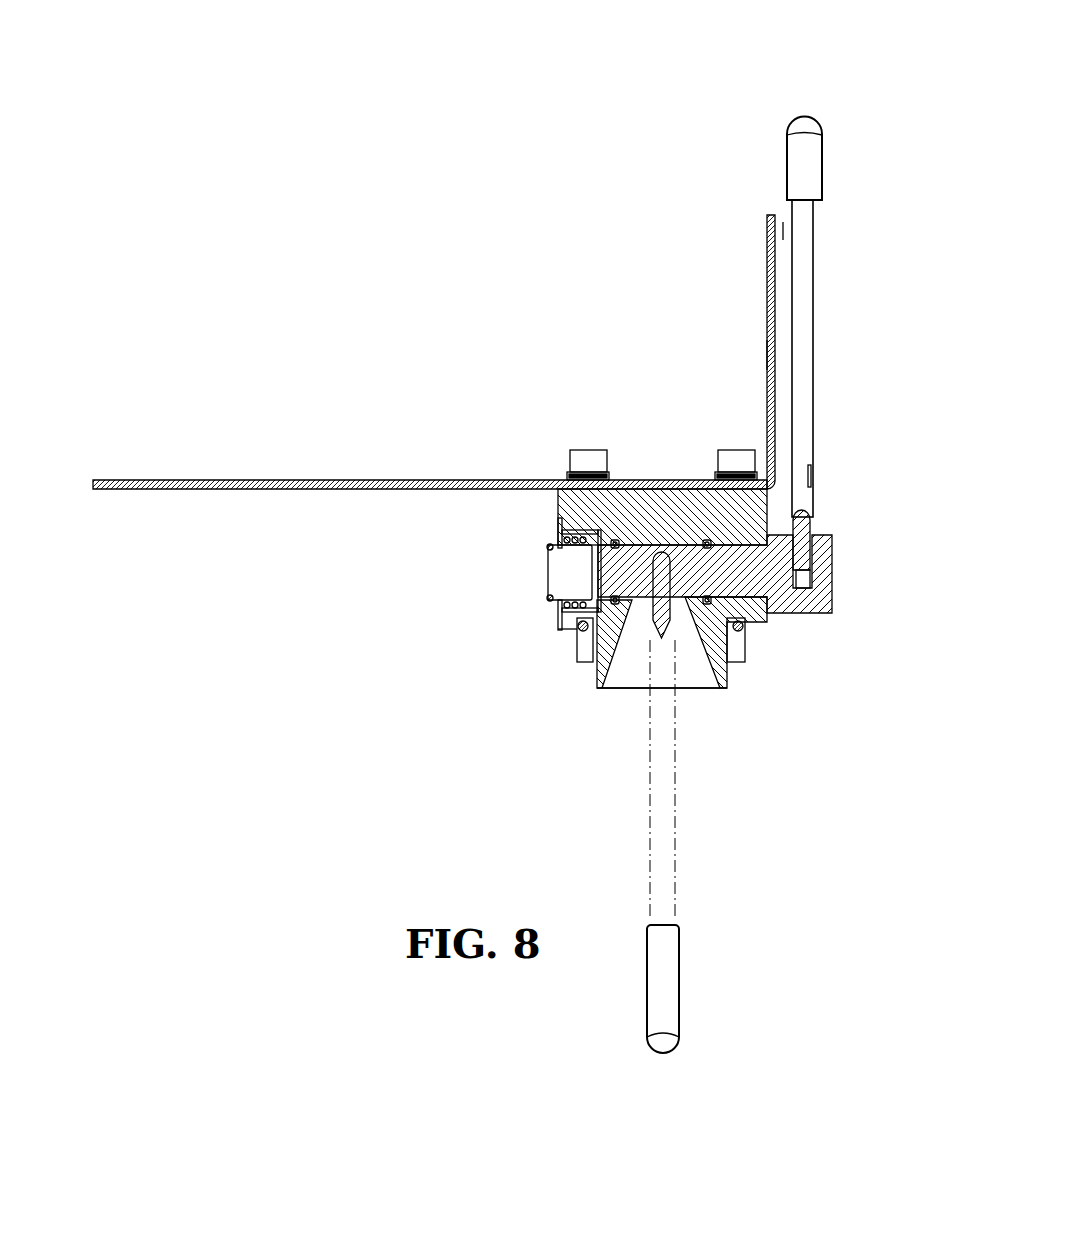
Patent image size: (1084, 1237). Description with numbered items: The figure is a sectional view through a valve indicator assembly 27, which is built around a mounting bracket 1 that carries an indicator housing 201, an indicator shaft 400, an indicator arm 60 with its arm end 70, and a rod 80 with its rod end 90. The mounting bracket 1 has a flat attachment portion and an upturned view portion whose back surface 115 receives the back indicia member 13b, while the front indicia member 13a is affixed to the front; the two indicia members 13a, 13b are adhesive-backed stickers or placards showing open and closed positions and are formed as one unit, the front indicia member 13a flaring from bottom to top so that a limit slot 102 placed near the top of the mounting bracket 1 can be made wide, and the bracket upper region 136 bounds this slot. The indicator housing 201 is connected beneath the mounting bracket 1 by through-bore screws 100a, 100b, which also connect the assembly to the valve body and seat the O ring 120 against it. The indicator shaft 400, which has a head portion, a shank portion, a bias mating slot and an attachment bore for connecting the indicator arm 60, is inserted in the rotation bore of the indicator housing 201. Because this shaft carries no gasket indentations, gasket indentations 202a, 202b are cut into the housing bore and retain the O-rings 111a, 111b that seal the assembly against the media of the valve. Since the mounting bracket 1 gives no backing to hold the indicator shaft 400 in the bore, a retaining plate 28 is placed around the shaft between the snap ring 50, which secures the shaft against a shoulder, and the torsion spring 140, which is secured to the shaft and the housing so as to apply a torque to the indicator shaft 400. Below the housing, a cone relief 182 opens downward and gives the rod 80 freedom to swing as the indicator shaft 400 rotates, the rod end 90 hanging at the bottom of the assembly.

The mounting bracket 1 is at (273, 480).
The valve indicator assembly 27 is at (800, 60).
The front indicia member 13a is at (784, 226).
The back indicia member 13b is at (767, 245).
The bracket top 136 is at (767, 222).
The limit slot 102 is at (767, 266).
The back surface 115 is at (763, 355).
The arm end 70 is at (812, 118).
The indicator arm 60 is at (815, 386).
The through-bore screw 100a is at (588, 450).
The through-bore screw 100b is at (738, 450).
The O-ring 111a is at (615, 540).
The O-ring 111b is at (707, 540).
The indicator shaft 400 is at (832, 560).
The torsion spring 140 is at (558, 535).
The snap ring 50 is at (548, 546).
The retaining plate 28 is at (558, 620).
The O ring 120 is at (745, 626).
The indicator housing 201 is at (663, 703).
The gasket indentation 202a is at (597, 662).
The gasket indentation 202b is at (728, 660).
The cone relief 182 is at (625, 680).
The rod 80 is at (675, 848).
The rod end 90 is at (679, 938).